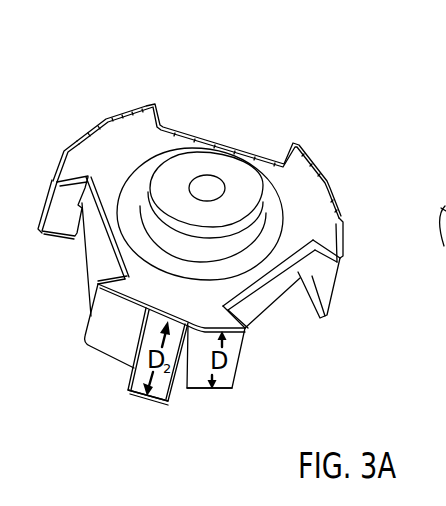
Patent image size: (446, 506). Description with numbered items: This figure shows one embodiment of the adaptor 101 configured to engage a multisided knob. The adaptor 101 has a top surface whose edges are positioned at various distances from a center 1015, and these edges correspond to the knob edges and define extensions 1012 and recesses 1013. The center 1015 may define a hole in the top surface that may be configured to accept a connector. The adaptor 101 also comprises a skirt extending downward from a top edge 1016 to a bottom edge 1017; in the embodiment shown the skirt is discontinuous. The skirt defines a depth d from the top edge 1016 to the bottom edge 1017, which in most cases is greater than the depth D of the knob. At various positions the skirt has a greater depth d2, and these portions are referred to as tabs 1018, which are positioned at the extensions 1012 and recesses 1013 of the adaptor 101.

The adaptor 101 is at (156, 108).
The extensions 1012 is at (67, 150).
The recesses 1013 is at (192, 137).
The center 1015 is at (201, 186).
The top edge 1016 is at (248, 328).
The bottom edge 1017 is at (202, 388).
The tabs 1018 is at (167, 400).